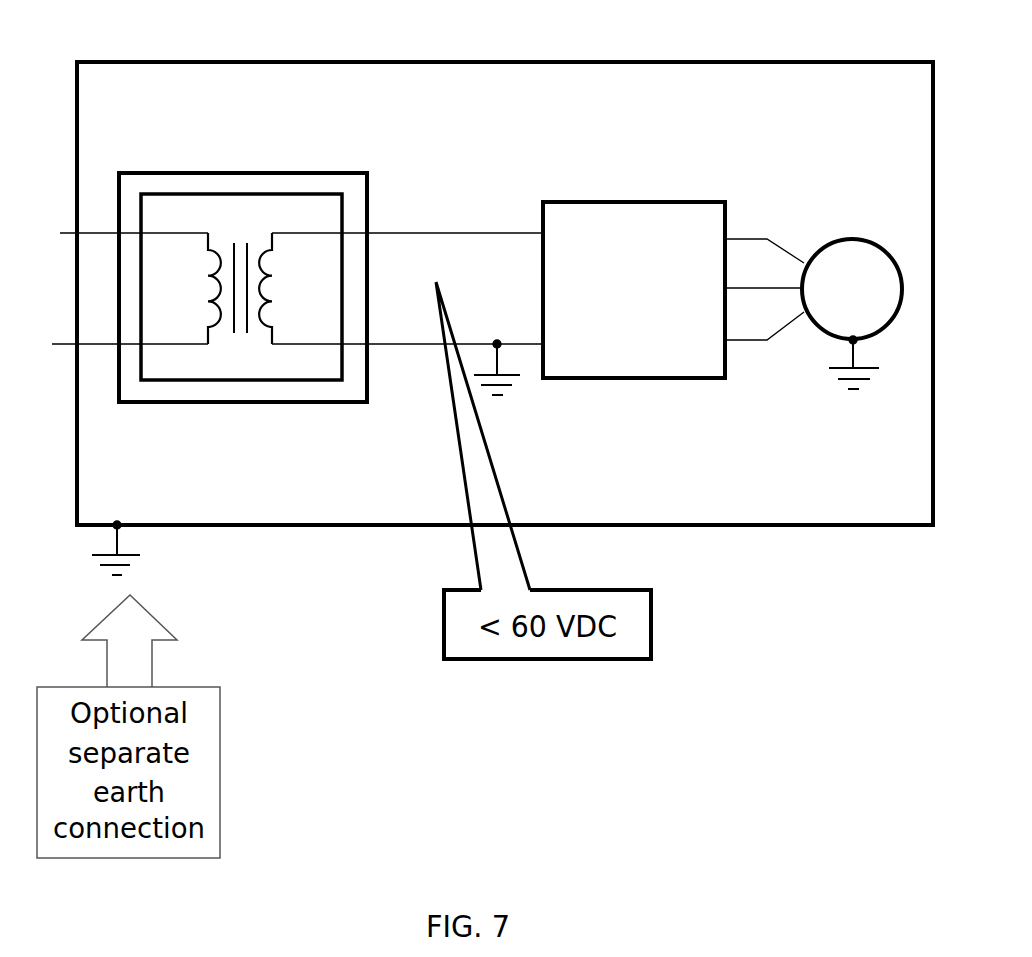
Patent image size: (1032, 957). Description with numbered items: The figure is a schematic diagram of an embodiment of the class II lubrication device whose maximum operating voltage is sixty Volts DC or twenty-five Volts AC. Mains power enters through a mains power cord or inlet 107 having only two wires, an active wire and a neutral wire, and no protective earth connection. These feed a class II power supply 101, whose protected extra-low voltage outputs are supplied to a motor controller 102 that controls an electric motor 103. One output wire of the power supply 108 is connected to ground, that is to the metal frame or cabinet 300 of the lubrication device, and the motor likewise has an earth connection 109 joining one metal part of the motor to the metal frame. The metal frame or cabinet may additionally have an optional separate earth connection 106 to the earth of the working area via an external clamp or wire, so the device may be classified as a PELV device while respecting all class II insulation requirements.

The power supply 101 is at (378, 168).
The motor controller 102 is at (710, 200).
The electric motor 103 is at (885, 248).
The optional separate earth connection 106 is at (150, 558).
The mains power cord or inlet 107 is at (34, 303).
The grounded output connection of the power supply 108 is at (512, 398).
The motor ground connection 109 is at (830, 403).
The metal frame or cabinet 300 is at (889, 533).